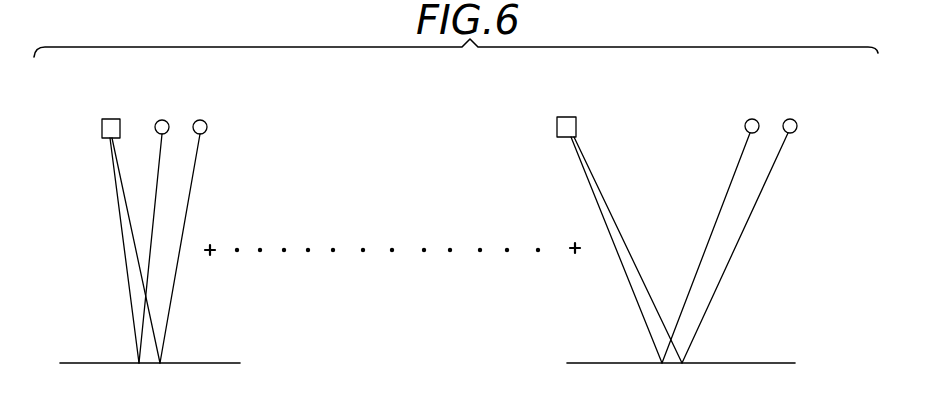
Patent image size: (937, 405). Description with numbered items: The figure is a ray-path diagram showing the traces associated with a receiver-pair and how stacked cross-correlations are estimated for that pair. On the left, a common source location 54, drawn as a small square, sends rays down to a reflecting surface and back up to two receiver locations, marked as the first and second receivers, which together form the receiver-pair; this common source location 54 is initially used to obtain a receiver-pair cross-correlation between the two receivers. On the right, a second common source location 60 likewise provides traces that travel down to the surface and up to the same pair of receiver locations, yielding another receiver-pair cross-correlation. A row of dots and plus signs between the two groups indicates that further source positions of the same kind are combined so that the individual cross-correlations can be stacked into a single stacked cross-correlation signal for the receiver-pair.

The common source location 54 is at (98, 118).
The common source location 60 is at (555, 118).